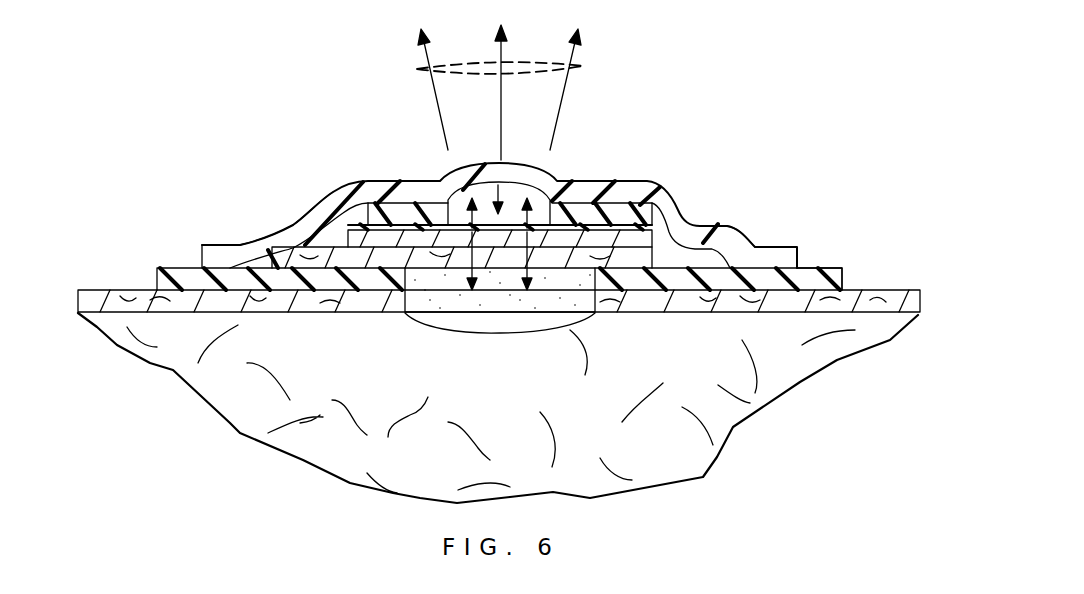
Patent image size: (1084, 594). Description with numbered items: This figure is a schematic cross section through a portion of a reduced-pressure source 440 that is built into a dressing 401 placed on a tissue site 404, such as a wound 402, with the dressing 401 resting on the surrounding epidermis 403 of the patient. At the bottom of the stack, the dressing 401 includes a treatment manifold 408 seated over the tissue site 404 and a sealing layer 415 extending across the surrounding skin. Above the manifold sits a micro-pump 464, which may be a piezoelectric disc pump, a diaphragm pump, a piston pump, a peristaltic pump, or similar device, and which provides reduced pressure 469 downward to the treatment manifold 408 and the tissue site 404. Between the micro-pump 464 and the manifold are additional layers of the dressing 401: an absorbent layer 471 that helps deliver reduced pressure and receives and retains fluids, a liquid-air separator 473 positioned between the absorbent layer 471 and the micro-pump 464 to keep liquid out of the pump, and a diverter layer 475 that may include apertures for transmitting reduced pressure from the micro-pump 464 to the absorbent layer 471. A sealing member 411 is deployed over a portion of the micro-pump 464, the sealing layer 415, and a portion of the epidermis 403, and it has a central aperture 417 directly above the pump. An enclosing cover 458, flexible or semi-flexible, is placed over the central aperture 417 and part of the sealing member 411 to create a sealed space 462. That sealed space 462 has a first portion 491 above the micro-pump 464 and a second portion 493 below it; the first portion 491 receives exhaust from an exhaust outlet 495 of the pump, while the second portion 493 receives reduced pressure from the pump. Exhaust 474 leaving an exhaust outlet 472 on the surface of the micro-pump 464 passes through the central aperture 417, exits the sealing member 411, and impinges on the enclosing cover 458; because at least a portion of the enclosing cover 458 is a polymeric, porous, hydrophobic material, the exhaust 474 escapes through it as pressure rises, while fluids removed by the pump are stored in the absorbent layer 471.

The dressing 401 is at (327, 218).
The wound 402 is at (514, 331).
The epidermis 403 is at (875, 300).
The tissue site 404 is at (435, 323).
The treatment manifold 408 is at (490, 300).
The sealing member 411 is at (810, 276).
The sealing layer 415 is at (320, 278).
The central aperture 417 is at (394, 222).
The reduced-pressure source 440 is at (682, 192).
The enclosing cover 458 is at (357, 190).
The sealed space 462 is at (496, 184).
The micro-pump 464 is at (390, 202).
The reduced pressure 469 is at (552, 262).
The absorbent layer 471 is at (634, 256).
The exhaust outlet 472 is at (573, 177).
The liquid-air separator 473 is at (345, 258).
The exhaust 474 is at (583, 66).
The diverter layer 475 is at (625, 204).
The first portion 491 is at (510, 200).
The second portion 493 is at (533, 270).
The exhaust outlet 495 is at (470, 177).